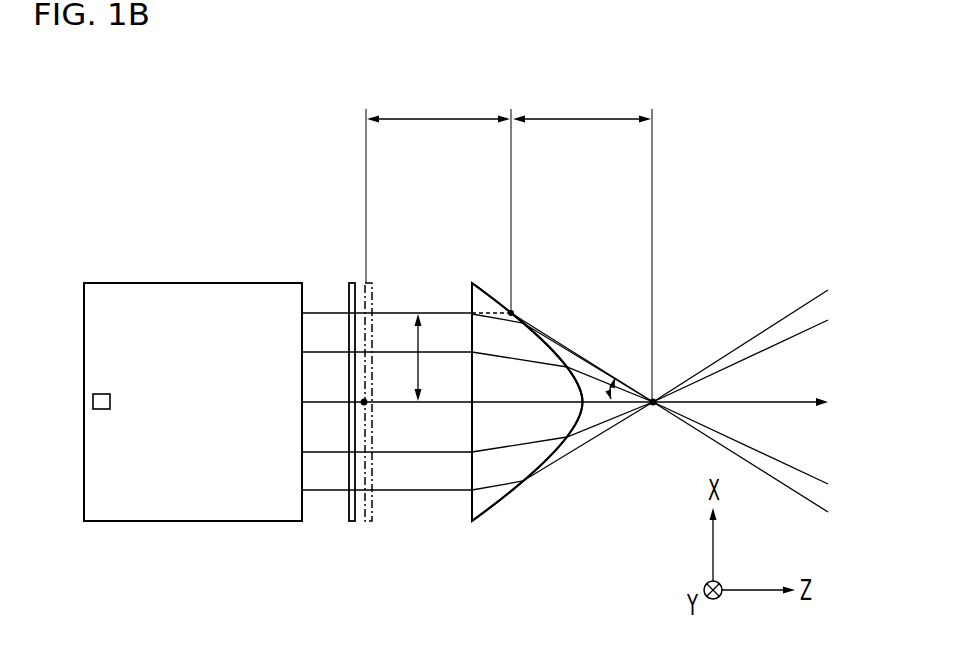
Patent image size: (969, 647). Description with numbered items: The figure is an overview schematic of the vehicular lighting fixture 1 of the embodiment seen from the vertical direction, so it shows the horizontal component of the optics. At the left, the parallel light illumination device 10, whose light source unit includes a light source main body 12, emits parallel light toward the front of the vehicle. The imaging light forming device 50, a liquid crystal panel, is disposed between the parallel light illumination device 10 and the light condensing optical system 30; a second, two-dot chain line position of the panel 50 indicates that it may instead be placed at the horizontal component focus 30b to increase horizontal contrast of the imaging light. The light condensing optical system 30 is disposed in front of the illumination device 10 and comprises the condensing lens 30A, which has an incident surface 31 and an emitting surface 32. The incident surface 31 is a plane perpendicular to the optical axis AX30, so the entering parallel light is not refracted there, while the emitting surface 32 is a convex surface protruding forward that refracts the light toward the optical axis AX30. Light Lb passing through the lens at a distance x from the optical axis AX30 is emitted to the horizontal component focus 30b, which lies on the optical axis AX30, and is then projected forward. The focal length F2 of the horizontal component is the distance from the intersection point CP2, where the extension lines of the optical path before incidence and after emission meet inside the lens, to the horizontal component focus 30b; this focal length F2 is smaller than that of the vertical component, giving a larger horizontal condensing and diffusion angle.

The vehicular lighting fixture 1 is at (856, 100).
The parallel light illumination device 10 is at (206, 271).
The light source main body 12 is at (101, 394).
The imaging light forming device 50 is at (336, 279).
The light condensing optical system 30 is at (487, 241).
The condensing lens 30A is at (499, 303).
The incident surface 31 is at (472, 298).
The emitting surface 32 is at (506, 497).
The horizontal component focus 30b is at (364, 403).
The intersection point CP2 is at (514, 312).
The optical axis AX30 is at (453, 403).
The light Lb is at (405, 313).
The focal length of the horizontal component F2 is at (509, 241).
The distance x is at (420, 338).